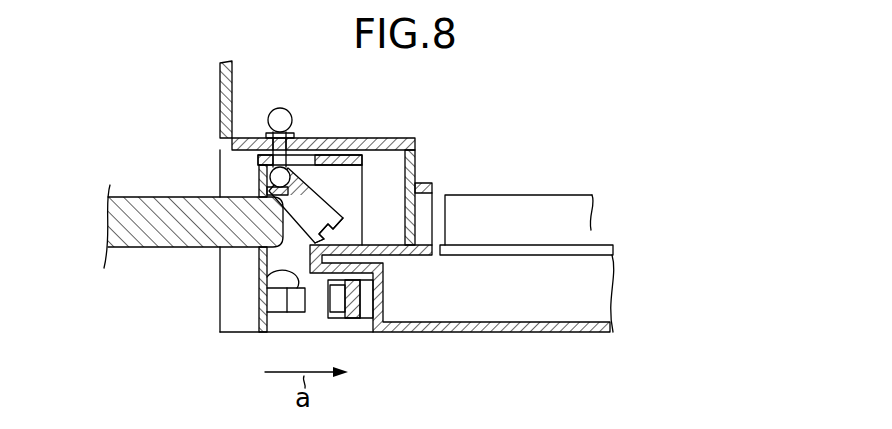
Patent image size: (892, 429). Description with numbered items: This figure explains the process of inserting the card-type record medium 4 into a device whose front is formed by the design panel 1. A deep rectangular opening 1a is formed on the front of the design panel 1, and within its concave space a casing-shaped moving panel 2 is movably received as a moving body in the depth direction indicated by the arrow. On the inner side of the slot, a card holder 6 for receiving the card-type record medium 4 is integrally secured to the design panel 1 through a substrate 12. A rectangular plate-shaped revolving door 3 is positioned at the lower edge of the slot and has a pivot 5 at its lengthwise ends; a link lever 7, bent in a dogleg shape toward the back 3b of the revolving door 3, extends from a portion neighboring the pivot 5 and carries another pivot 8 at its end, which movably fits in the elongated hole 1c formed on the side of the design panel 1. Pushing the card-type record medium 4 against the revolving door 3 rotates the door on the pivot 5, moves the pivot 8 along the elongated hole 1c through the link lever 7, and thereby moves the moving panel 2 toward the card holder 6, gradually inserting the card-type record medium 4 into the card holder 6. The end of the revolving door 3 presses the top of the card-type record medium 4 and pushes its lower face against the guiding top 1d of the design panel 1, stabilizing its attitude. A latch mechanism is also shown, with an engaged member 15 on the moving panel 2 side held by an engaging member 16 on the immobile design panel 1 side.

The design panel 1 is at (220, 90).
The rectangular opening 1a is at (227, 314).
The elongated hole 1c is at (266, 136).
The guiding top 1d is at (340, 245).
The moving panel 2 is at (258, 305).
The revolving door 3 is at (275, 191).
The back of the revolving door 3b is at (320, 208).
The card-type record medium 4 is at (133, 248).
The pivot 5 is at (260, 162).
The card holder 6 is at (550, 193).
The link lever 7 is at (264, 138).
The pivot 8 is at (292, 121).
The substrate 12 is at (562, 256).
The engaged member 15 is at (258, 281).
The engaging member 16 is at (354, 319).